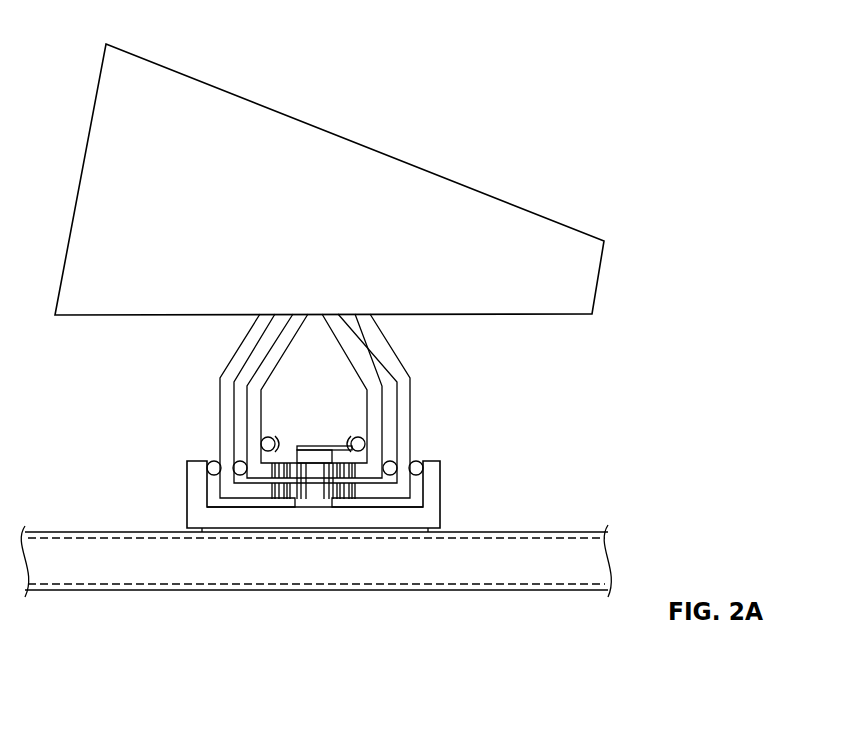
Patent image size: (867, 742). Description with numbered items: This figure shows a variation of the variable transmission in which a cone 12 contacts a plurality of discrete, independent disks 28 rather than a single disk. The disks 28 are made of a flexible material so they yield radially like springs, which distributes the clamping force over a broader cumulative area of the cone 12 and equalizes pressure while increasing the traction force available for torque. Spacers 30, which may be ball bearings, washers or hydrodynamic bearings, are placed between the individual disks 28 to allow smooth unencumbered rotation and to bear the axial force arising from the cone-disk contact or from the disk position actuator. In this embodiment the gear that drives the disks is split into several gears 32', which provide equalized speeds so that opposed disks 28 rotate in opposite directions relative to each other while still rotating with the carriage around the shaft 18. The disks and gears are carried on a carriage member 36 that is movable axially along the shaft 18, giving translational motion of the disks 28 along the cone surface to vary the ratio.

The cone 12 is at (350, 181).
The shaft 18 is at (65, 532).
The disks 28 is at (412, 393).
The spacers 30 is at (212, 461).
The gears 32' is at (261, 445).
The carriage member 36 is at (433, 513).